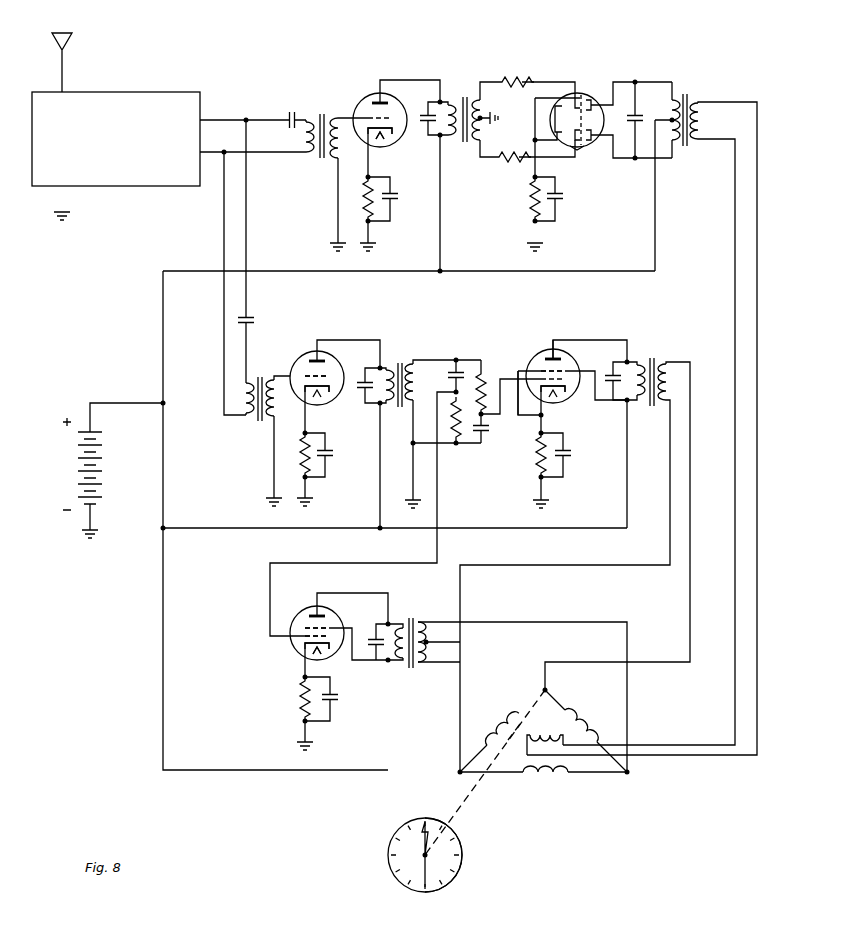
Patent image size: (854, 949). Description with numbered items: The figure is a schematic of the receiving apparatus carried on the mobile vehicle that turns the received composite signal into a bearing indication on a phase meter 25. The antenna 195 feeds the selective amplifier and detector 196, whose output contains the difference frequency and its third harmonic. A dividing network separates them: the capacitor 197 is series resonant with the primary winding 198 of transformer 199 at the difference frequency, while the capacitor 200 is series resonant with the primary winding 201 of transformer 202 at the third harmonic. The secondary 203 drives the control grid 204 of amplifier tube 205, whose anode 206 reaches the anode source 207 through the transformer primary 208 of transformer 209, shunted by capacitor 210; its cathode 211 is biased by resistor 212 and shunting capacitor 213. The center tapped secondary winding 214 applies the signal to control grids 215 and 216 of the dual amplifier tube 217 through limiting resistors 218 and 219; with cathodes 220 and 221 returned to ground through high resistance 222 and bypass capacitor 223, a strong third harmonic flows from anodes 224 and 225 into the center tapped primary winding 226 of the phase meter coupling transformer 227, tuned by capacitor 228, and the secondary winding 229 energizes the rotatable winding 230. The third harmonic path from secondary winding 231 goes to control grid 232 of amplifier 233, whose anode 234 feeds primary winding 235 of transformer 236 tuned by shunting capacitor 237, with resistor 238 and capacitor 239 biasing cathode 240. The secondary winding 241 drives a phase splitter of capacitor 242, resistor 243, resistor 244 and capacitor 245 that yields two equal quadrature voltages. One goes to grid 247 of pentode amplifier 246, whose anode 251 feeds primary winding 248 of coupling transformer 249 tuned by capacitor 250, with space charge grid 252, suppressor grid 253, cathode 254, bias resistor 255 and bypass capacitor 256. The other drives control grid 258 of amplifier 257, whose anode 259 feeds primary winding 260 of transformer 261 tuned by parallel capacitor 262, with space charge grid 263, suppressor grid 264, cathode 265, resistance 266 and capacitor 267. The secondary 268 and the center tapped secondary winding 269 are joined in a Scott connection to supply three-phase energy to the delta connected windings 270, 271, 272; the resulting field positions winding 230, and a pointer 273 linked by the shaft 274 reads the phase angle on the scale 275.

The phase meter 25 is at (452, 803).
The antenna 195 is at (75, 37).
The selective amplifier and detector 196 is at (122, 92).
The capacitor 197 is at (289, 112).
The primary winding 198 is at (305, 153).
The transformer 199 is at (341, 107).
The capacitor 200 is at (248, 321).
The primary winding 201 is at (248, 414).
The transformer 202 is at (282, 369).
The secondary 203 is at (336, 160).
The control grid 204 is at (392, 134).
The amplifier tube 205 is at (365, 86).
The anode 206 is at (380, 80).
The anode source 207 is at (104, 470).
The transformer primary 208 is at (448, 137).
The transformer 209 is at (478, 99).
The capacitor 210 is at (428, 130).
The cathode 211 is at (368, 136).
The resistor 212 is at (370, 224).
The shunting capacitor 213 is at (397, 200).
The center tapped secondary winding 214 is at (482, 118).
The control grid 215 is at (583, 96).
The control grid 216 is at (582, 148).
The dual amplifier tube 217 is at (555, 118).
The limiting resistor 218 is at (510, 80).
The limiting resistor 219 is at (509, 160).
The cathode 220 is at (570, 96).
The cathode 221 is at (576, 142).
The high resistance 222 is at (535, 208).
The bypass capacitor 223 is at (557, 208).
The anode 224 is at (592, 100).
The anode 225 is at (592, 142).
The center tapped primary winding 226 is at (676, 140).
The phase meter coupling transformer 227 is at (720, 96).
The capacitor 228 is at (641, 118).
The secondary winding 229 is at (706, 122).
The rotatable winding 230 is at (565, 745).
The secondary winding 231 is at (272, 420).
The control grid 232 is at (333, 375).
The amplifier 233 is at (303, 367).
The anode 234 is at (318, 362).
The primary winding 235 is at (413, 410).
The transformer 236 is at (406, 353).
The shunting capacitor 237 is at (366, 398).
The resistor 238 is at (310, 478).
The capacitor 239 is at (333, 458).
The cathode 240 is at (322, 393).
The secondary winding 241 is at (410, 398).
The capacitor 242 is at (452, 366).
The resistor 243 is at (456, 442).
The resistor 244 is at (481, 372).
The capacitor 245 is at (484, 435).
The amplifier 246 is at (300, 618).
The grid 247 is at (304, 650).
The primary winding 248 is at (402, 660).
The coupling transformer 249 is at (429, 610).
The shunting capacitor 250 is at (375, 653).
The anode 251 is at (317, 614).
The space charge grid 252 is at (330, 636).
The suppressor grid 253 is at (328, 626).
The cathode 254 is at (322, 660).
The bias resistor 255 is at (302, 692).
The bypass capacitor 256 is at (338, 704).
The amplifier 257 is at (535, 368).
The control grid 258 is at (548, 398).
The anode 259 is at (553, 358).
The primary winding 260 is at (664, 404).
The transformer 261 is at (669, 354).
The parallel capacitor 262 is at (613, 392).
The space charge grid 263 is at (565, 371).
The suppressor grid 264 is at (570, 358).
The cathode 265 is at (520, 418).
The resistance 266 is at (545, 480).
The capacitor 267 is at (569, 458).
The secondary 268 is at (672, 366).
The center tapped secondary winding 269 is at (434, 654).
The delta connected winding 270 is at (495, 736).
The delta connected winding 271 is at (589, 732).
The delta connected winding 272 is at (538, 778).
The pointer 273 is at (432, 886).
The shaft 274 is at (478, 800).
The scale 275 is at (462, 853).